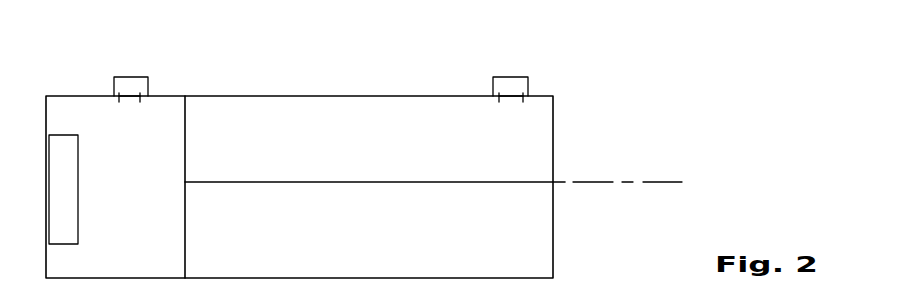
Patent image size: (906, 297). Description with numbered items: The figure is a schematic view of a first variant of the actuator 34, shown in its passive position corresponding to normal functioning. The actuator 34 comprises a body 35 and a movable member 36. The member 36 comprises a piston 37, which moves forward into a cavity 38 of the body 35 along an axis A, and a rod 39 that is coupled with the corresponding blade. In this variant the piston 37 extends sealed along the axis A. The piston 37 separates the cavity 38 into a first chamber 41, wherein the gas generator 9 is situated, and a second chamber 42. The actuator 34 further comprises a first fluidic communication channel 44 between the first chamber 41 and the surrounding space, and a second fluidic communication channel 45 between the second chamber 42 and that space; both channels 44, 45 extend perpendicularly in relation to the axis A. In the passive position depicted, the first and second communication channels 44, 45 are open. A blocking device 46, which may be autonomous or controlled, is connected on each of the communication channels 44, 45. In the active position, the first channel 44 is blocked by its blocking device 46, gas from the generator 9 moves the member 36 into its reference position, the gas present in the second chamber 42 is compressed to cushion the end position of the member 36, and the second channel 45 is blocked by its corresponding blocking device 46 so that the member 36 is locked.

The gas generator 9 is at (59, 196).
The actuator 34 is at (365, 78).
The body 35 is at (70, 96).
The movable member 36 is at (283, 181).
The piston 37 is at (185, 230).
The cavity 38 is at (233, 123).
The rod 39 is at (375, 181).
The first chamber 41 is at (147, 230).
The second chamber 42 is at (354, 230).
The first fluidic communication channel 44 is at (129, 98).
The second fluidic communication channel 45 is at (509, 98).
The blocking device 46 is at (131, 86).
The axis A is at (651, 184).